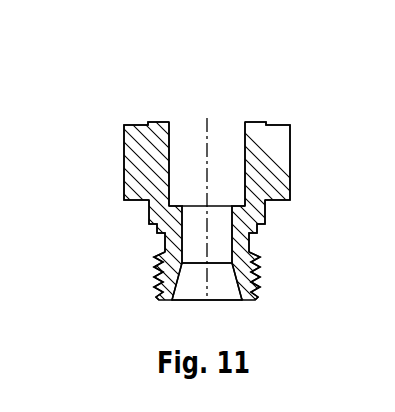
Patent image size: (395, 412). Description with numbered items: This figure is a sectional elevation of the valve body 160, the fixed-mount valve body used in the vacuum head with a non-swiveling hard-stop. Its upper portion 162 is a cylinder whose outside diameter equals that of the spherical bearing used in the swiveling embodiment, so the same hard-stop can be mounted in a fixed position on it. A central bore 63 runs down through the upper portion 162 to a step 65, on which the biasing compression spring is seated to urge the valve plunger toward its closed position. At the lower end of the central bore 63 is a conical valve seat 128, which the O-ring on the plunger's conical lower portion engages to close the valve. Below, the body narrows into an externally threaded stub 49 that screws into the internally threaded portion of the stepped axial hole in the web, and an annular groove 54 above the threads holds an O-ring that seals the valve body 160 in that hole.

The valve body 160 is at (121, 70).
The upper portion 162 is at (293, 148).
The central bore 63 is at (194, 128).
The step 65 is at (237, 200).
The annular groove 54 is at (250, 240).
The externally threaded stub 49 is at (258, 272).
The conical valve seat 128 is at (238, 279).